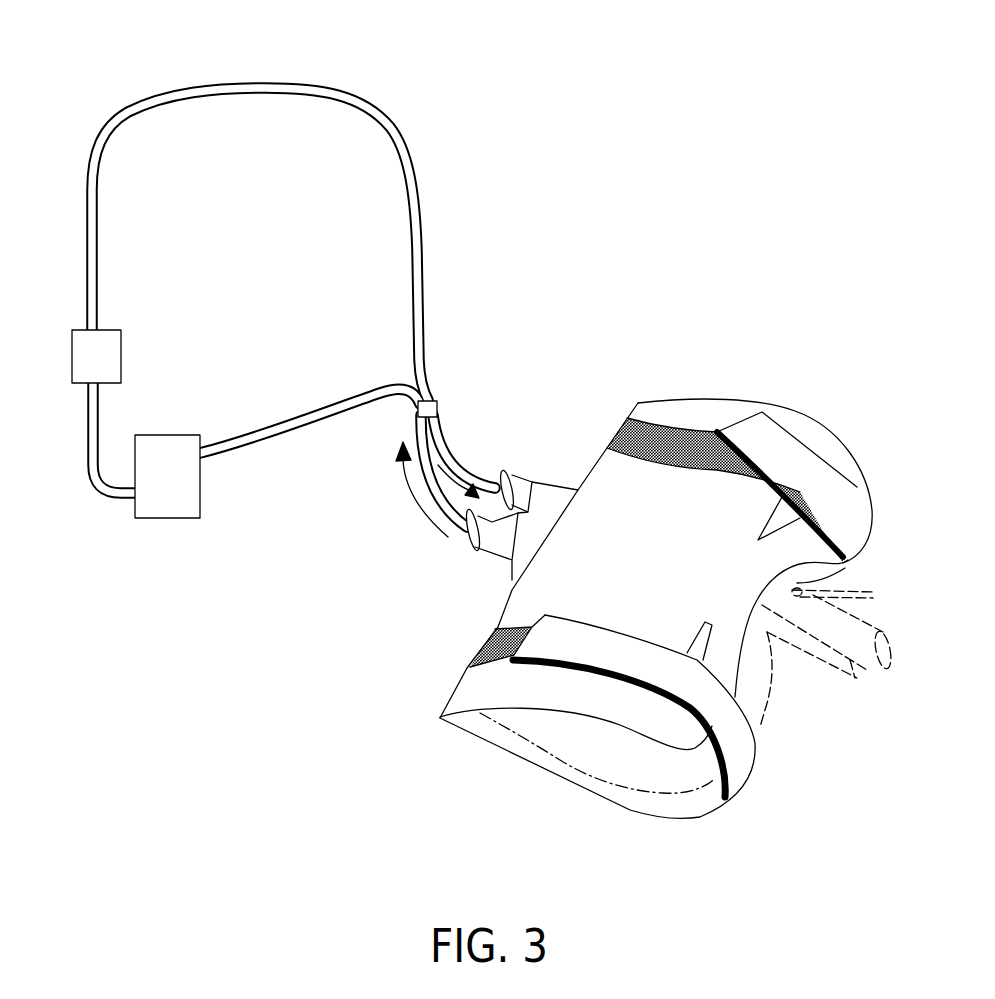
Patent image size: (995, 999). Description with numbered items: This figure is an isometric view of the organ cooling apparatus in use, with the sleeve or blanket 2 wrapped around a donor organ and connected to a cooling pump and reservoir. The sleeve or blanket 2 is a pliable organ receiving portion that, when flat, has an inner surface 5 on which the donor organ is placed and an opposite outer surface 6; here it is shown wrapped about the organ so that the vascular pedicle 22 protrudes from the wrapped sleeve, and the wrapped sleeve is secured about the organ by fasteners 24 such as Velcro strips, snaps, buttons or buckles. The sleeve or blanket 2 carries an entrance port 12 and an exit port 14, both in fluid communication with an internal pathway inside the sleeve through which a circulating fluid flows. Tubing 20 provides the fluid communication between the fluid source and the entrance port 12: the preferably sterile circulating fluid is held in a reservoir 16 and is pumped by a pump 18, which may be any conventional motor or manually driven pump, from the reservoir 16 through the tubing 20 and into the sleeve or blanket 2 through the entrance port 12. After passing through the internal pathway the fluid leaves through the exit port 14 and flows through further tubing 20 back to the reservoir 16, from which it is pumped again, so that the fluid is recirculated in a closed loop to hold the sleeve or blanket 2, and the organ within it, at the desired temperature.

The sleeve or blanket 2 is at (670, 423).
The inner surface 5 is at (502, 737).
The outer surface 6 is at (477, 688).
The entrance port 12 is at (500, 470).
The exit port 14 is at (468, 542).
The reservoir 16 is at (186, 518).
The pump 18 is at (121, 350).
The tubing 20 is at (266, 83).
The vascular pedicle 22 is at (781, 692).
The fasteners 24 is at (810, 463).